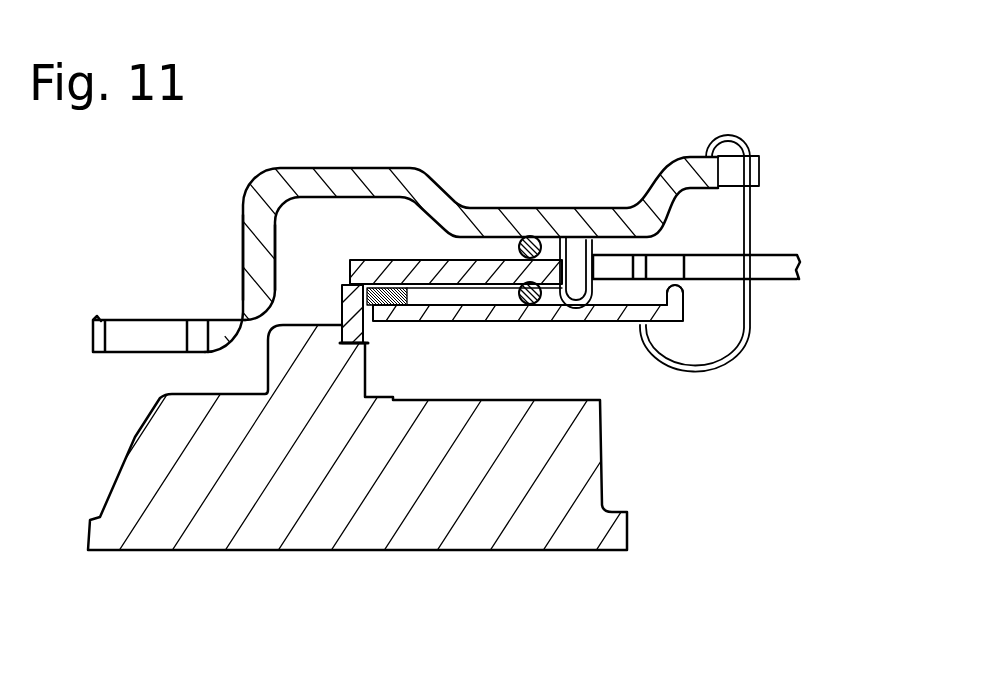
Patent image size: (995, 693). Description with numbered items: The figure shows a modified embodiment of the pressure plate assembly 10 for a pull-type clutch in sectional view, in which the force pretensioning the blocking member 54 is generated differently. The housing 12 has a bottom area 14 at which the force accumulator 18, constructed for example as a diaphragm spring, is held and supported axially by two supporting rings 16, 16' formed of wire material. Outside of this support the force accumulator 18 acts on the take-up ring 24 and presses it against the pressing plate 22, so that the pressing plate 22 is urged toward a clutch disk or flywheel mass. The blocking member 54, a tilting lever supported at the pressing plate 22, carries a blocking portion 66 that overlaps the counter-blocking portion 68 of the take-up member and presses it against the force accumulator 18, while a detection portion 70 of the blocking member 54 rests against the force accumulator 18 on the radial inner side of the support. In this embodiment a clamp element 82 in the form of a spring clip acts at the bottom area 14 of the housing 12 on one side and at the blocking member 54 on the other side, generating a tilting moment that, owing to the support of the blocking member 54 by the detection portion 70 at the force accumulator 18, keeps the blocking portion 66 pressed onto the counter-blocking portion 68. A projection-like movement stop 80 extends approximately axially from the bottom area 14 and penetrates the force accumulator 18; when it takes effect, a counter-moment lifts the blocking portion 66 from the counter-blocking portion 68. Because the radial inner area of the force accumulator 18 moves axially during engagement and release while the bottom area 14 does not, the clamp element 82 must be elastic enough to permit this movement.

The pressure plate assembly 10 is at (712, 82).
The housing 12 is at (148, 318).
The bottom area 14 is at (447, 198).
The supporting ring 16 is at (467, 225).
The supporting ring 16' is at (517, 196).
The force accumulator 18 is at (772, 250).
The pressing plate 22 is at (487, 527).
The take-up ring 24 is at (340, 300).
The blocking member 54 is at (545, 323).
The blocking portion 66 is at (392, 315).
The counter-blocking portion 68 is at (391, 288).
The detection portion 70 is at (677, 292).
The movement stop 80 is at (577, 290).
The clamp element 82 is at (750, 202).